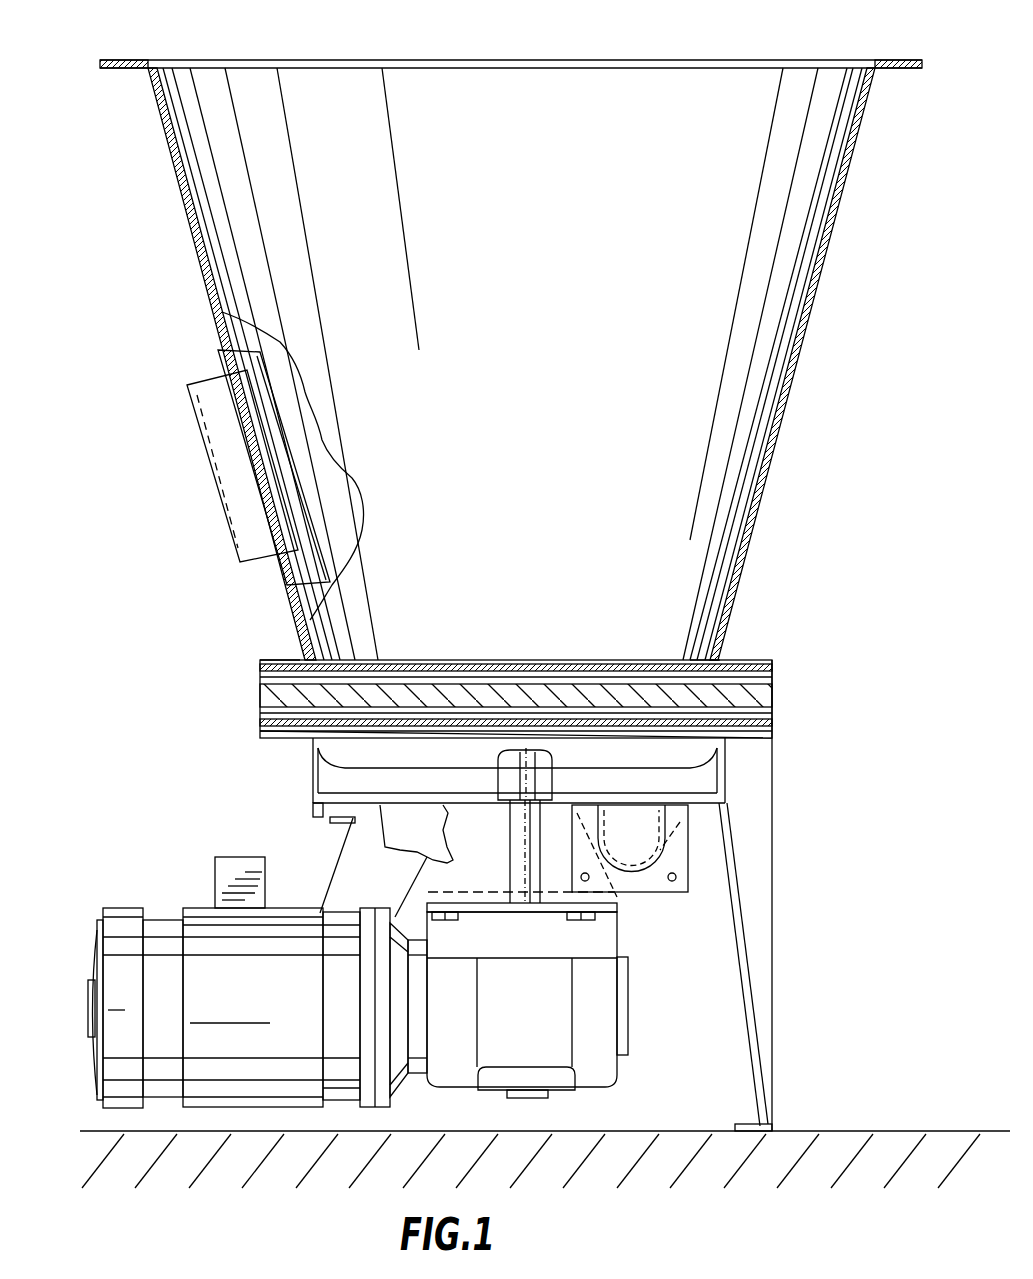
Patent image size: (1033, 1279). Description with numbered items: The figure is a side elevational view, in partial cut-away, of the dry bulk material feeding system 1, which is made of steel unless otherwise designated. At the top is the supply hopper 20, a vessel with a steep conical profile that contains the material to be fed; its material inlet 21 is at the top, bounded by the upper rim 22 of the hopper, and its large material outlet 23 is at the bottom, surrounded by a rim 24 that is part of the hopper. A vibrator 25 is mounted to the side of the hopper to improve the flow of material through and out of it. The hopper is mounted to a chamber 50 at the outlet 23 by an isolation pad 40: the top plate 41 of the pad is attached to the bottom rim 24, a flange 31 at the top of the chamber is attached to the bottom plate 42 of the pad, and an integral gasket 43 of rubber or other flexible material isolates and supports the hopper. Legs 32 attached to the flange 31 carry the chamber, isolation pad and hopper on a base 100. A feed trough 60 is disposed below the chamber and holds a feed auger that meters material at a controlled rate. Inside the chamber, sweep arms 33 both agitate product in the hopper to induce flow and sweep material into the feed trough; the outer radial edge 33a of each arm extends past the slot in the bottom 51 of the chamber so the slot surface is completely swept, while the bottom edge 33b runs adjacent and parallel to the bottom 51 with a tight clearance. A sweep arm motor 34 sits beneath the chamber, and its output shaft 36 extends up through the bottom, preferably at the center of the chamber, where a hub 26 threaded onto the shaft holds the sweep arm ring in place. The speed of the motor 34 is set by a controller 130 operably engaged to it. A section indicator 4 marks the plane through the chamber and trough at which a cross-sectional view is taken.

The dry bulk material feeding system 1 is at (158, 652).
The supply hopper 20 is at (815, 270).
The material inlet 21 is at (575, 60).
The upper flange 22 is at (114, 62).
The material outlet 23 is at (707, 658).
The rim 24 is at (258, 660).
The vibrator 25 is at (212, 508).
The hub 26 is at (552, 760).
The flange 31 is at (772, 738).
The legs 32 is at (774, 1000).
The sweep arms 33 is at (554, 825).
The outer radial edge 33a is at (316, 768).
The bottom edge 33b is at (402, 785).
The sweep arm motor 34 is at (263, 1003).
The sweep arm motor output shaft 36 is at (525, 848).
The isolation pad 40 is at (540, 685).
The top plate 41 is at (768, 668).
The bottom plate 42 is at (765, 722).
The integral gasket 43 is at (765, 695).
The chamber 50 is at (305, 790).
The bottom 51 is at (320, 817).
The feed trough 60 is at (645, 880).
The base 100 is at (795, 1133).
The controller 130 is at (212, 878).
The section line 4- 4 is at (280, 747).